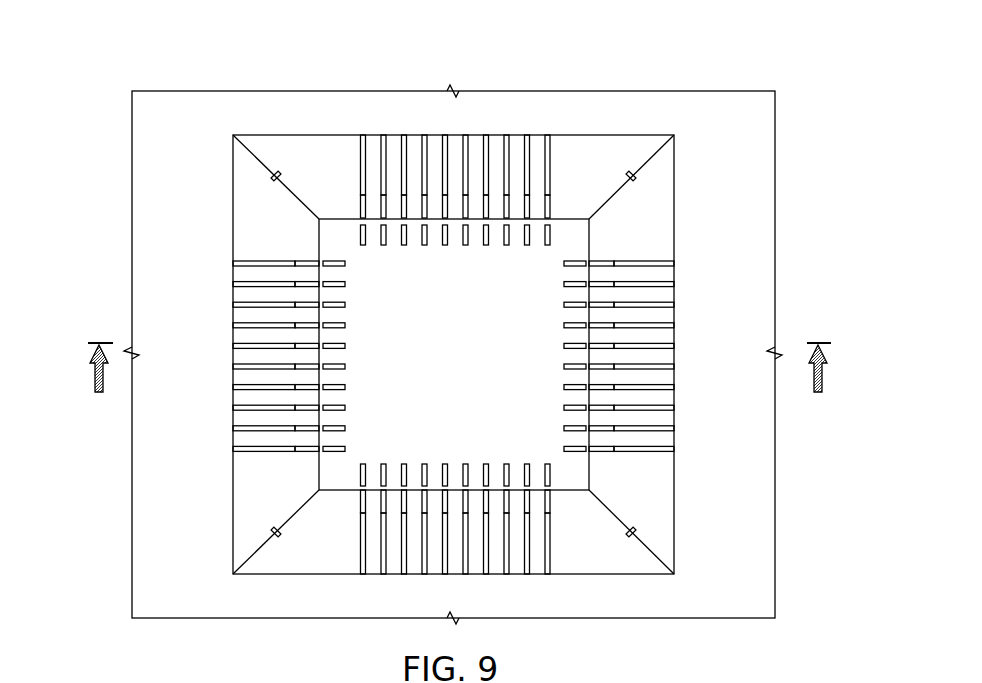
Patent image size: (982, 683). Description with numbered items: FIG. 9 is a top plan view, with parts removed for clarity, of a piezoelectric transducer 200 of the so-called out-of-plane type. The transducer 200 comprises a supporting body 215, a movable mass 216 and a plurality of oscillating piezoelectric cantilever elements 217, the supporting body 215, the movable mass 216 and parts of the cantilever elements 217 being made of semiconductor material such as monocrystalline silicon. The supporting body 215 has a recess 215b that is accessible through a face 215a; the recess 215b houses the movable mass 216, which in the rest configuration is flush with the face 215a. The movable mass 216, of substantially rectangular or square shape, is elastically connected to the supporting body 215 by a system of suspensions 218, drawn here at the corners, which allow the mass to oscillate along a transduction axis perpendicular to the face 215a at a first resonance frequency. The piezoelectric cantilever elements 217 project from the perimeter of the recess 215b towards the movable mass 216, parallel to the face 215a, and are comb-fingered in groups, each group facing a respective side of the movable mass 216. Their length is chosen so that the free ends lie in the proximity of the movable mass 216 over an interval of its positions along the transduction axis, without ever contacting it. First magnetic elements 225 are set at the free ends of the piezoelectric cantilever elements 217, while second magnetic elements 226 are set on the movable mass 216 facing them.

The piezoelectric transducer 200 is at (653, 82).
The supporting body 215 is at (158, 91).
The face 215a is at (147, 160).
The recess 215b is at (305, 141).
The movable mass 216 is at (484, 356).
The piezoelectric cantilever elements 217 is at (426, 135).
The suspensions 218 is at (272, 181).
The first magnetic elements 225 is at (484, 212).
The second magnetic elements 226 is at (364, 246).